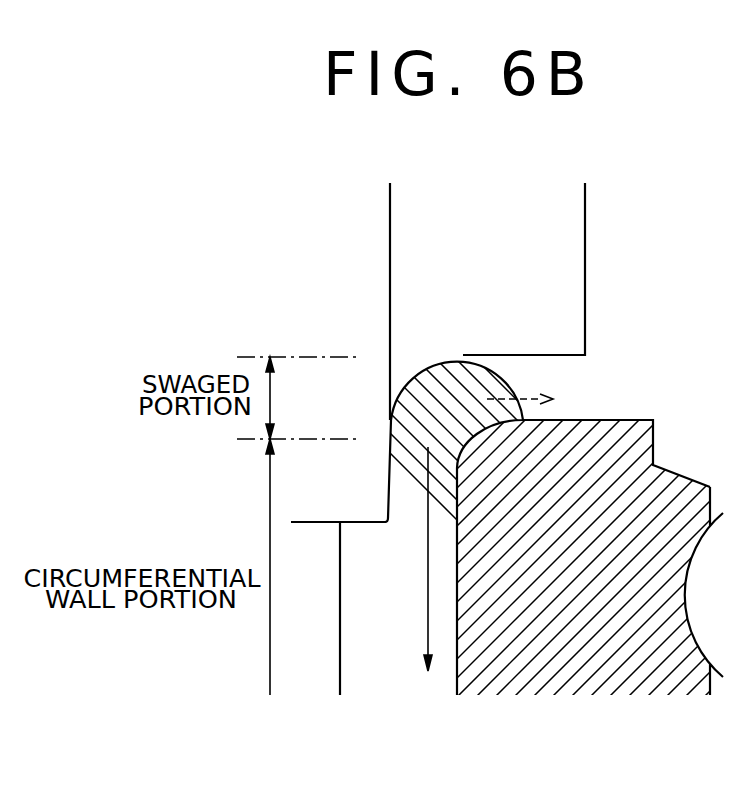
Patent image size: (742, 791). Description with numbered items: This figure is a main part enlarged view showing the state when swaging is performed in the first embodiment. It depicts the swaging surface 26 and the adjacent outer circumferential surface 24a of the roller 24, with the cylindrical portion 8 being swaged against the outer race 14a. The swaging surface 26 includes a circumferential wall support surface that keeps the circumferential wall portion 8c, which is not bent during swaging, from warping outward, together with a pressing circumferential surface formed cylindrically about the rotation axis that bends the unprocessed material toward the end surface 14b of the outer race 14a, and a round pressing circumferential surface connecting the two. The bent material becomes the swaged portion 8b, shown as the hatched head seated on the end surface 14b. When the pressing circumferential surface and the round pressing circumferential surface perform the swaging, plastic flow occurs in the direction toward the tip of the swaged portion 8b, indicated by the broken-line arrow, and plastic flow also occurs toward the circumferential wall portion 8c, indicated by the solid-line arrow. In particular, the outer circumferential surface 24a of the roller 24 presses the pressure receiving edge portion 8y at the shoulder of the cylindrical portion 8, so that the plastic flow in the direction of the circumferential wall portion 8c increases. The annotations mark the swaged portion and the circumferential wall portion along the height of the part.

The roller 24 is at (316, 236).
The outer circumferential surface 24a is at (310, 524).
The swaging surface 26 is at (571, 268).
The cylindrical portion 8 is at (371, 395).
The swaged portion 8b is at (428, 371).
The circumferential wall portion 8c is at (340, 655).
The pressure receiving edge portion 8y is at (360, 535).
The outer race 14a is at (553, 686).
The end surface 14b is at (567, 414).